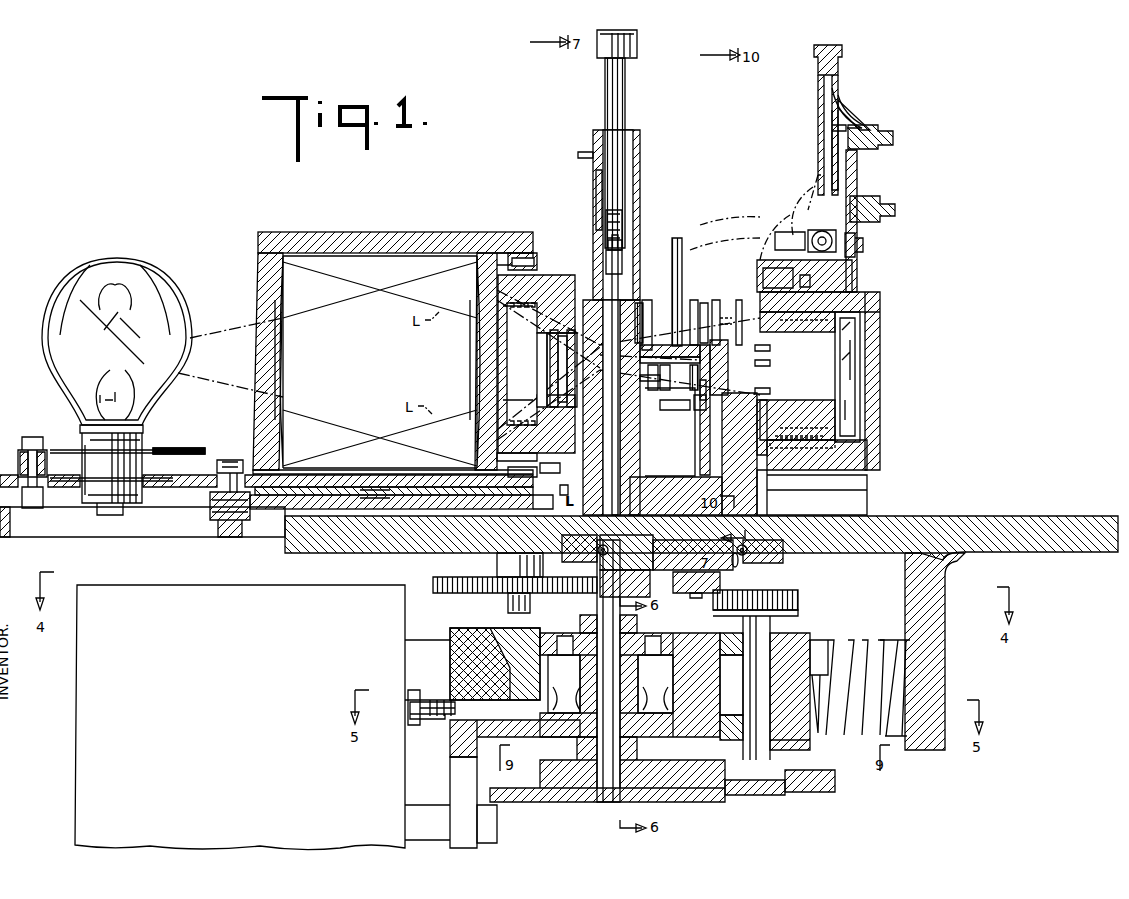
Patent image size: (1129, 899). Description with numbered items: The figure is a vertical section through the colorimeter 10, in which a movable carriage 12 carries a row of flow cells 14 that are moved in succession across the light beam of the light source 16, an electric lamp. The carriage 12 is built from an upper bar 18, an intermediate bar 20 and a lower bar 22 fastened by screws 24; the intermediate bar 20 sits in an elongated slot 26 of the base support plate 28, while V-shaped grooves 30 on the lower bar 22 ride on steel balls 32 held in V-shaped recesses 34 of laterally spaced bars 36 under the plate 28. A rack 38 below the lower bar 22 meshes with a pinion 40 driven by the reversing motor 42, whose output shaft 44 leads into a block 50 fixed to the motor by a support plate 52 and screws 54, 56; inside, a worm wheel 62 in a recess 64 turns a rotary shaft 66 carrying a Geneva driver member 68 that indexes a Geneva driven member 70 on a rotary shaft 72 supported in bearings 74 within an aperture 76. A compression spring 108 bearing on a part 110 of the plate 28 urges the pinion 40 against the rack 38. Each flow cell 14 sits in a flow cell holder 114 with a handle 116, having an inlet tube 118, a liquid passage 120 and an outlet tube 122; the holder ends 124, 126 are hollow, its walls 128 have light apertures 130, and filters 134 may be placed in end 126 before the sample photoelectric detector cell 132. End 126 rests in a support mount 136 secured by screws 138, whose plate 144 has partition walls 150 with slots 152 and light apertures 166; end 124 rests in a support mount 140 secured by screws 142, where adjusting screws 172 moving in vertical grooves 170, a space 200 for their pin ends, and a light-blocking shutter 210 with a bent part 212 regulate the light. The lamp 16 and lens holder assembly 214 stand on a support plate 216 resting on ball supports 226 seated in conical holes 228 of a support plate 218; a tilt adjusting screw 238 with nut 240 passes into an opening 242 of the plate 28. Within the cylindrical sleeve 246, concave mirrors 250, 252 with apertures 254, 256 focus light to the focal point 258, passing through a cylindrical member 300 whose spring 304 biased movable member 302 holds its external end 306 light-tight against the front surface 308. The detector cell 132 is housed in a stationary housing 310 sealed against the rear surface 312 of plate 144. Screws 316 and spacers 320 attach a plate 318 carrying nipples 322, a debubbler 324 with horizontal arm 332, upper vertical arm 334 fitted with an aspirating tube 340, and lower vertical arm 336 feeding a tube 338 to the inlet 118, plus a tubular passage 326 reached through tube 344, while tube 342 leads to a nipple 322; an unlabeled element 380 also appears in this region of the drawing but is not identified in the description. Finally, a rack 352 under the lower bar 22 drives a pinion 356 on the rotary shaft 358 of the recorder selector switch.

The colorimeter 10 is at (940, 265).
The movable carriage 12 is at (642, 472).
The flow cell 14 is at (686, 403).
The light source 16 is at (150, 270).
The upper bar 18 is at (670, 475).
The intermediate bar 20 is at (719, 446).
The lower bar 22 is at (748, 567).
The screws 24 is at (669, 423).
The elongated slot 26 is at (660, 570).
The base support plate 28 is at (883, 518).
The V-shaped grooves 30 is at (602, 592).
The steel balls 32 is at (742, 556).
The V-shaped recesses 34 is at (600, 552).
The laterally spaced bars 36 is at (805, 564).
The rack 38 is at (678, 602).
The pinion 40 is at (796, 596).
The double shaded pole reversing motor 42 is at (262, 717).
The output shaft 44 is at (412, 720).
The block 50 is at (514, 630).
The support plate 52 is at (477, 846).
The screw 54 is at (824, 656).
The screw 56 is at (497, 821).
The worm wheel 62 is at (670, 685).
The recess 64 is at (568, 685).
The rotary shaft 66 is at (597, 804).
The Geneva driver member 68 is at (700, 804).
The Geneva driven member 70 is at (832, 793).
The rotary shaft 72 is at (770, 792).
The bearings 74 is at (730, 704).
The aperture 76 is at (790, 642).
The compression spring 108 is at (887, 726).
The part 110 is at (945, 665).
The flow cell holder 114 is at (655, 336).
The handle 116 is at (680, 260).
The inlet tube 118 is at (694, 430).
The liquid passage 120 is at (684, 395).
The outlet tube 122 is at (640, 302).
The end 124 is at (628, 403).
The end 126 is at (730, 367).
The walls 128 is at (674, 368).
The light apertures 130 is at (670, 360).
The sample photoelectric detector cell 132 is at (866, 308).
The filters 134 is at (754, 354).
The support mount 136 is at (734, 296).
The screws 138 is at (765, 492).
The support mount 140 is at (644, 176).
The screws 142 is at (578, 496).
The plate 144 is at (766, 470).
The partition walls 150 is at (720, 316).
The slot 152 is at (738, 300).
The light apertures 166 is at (774, 370).
The vertical grooves 170 is at (622, 274).
The adjusting screws 172 is at (624, 88).
The space 200 is at (606, 268).
The light-blocking shutter 210 is at (594, 188).
The upper bent part 212 is at (578, 152).
The lens holder assembly 214 is at (403, 231).
The support plate 216 is at (183, 478).
The support plate 218 is at (267, 512).
The ball supports 226 is at (375, 490).
The conical holes 228 is at (382, 512).
The tilt adjusting screw 238 is at (230, 460).
The nut 240 is at (210, 514).
The opening 242 is at (12, 540).
The cylindrical sleeve 246 is at (325, 232).
The concave mirror 250 is at (262, 293).
The concave mirror 252 is at (478, 290).
The central aperture 254 is at (282, 328).
The aperture 256 is at (477, 392).
The focal point 258 is at (657, 383).
The cylindrical member 300 is at (552, 276).
The movable member 302 is at (554, 372).
The compression spring 304 is at (545, 457).
The external end 306 is at (550, 366).
The front surface 308 is at (564, 469).
The stationary housing 310 is at (884, 299).
The rear surface 312 is at (817, 500).
The screws 316 is at (854, 256).
The plate 318 is at (842, 164).
The spacers 320 is at (846, 289).
The nipples 322 is at (852, 208).
The debubbler 324 is at (806, 114).
The tubular passage 326 is at (812, 242).
The horizontal arm 332 is at (852, 124).
The upper vertical arm 334 is at (813, 83).
The lower vertical arm 336 is at (818, 157).
The tube 338 is at (690, 465).
The aspirating tube 340 is at (814, 49).
The tube 342 is at (696, 222).
The tube 344 is at (725, 242).
The rack 352 is at (580, 616).
The pinion 356 is at (442, 574).
The rotary shaft 358 is at (508, 606).
The block 380 is at (776, 241).